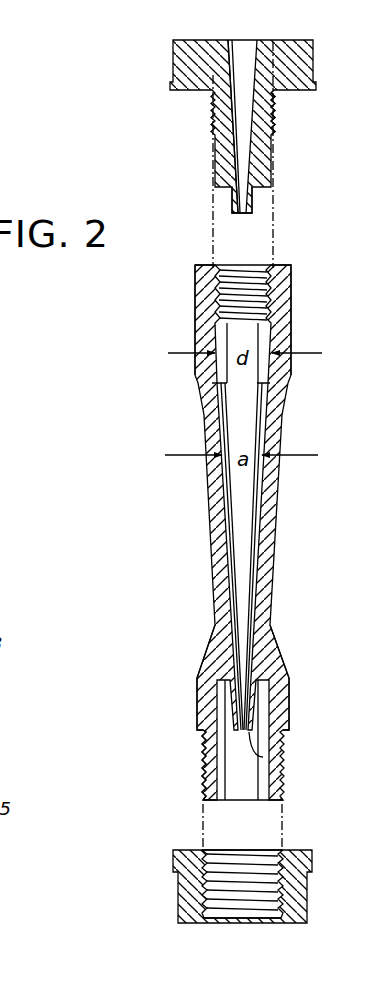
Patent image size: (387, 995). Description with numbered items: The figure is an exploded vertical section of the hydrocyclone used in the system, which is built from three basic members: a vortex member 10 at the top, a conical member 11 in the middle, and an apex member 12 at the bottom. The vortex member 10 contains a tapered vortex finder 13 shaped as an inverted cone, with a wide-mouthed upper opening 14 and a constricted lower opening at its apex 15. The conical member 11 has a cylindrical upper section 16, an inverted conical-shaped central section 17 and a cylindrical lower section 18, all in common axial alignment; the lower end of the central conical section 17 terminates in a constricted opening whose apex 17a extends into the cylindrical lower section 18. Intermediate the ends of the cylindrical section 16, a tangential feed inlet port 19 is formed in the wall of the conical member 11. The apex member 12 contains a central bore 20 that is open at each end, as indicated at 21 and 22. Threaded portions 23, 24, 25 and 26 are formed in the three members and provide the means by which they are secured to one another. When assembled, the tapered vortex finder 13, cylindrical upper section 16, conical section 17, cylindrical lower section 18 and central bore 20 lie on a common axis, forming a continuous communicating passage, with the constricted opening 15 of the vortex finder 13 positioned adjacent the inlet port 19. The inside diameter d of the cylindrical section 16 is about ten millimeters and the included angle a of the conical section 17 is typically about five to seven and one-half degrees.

The vortex member 10 is at (163, 93).
The conical member 11 is at (293, 437).
The apex member 12 is at (172, 920).
The tapered vortex finder 13 is at (243, 133).
The wide-mouthed upper opening 14 is at (176, 40).
The constricted lower opening 15 is at (252, 201).
The cylindrical upper section 16 is at (293, 364).
The conical central section 17 is at (250, 507).
The apex of constricted opening 17a is at (263, 760).
The cylindrical lower section 18 is at (290, 715).
The tangential feed inlet port 19 is at (217, 378).
The central bore 20 is at (278, 897).
The open end of central bore 21 is at (233, 855).
The open end of central bore 22 is at (262, 923).
The threaded portion 23 is at (273, 100).
The threaded portion 24 is at (250, 278).
The threaded portion 25 is at (203, 756).
The threaded portion 26 is at (258, 885).